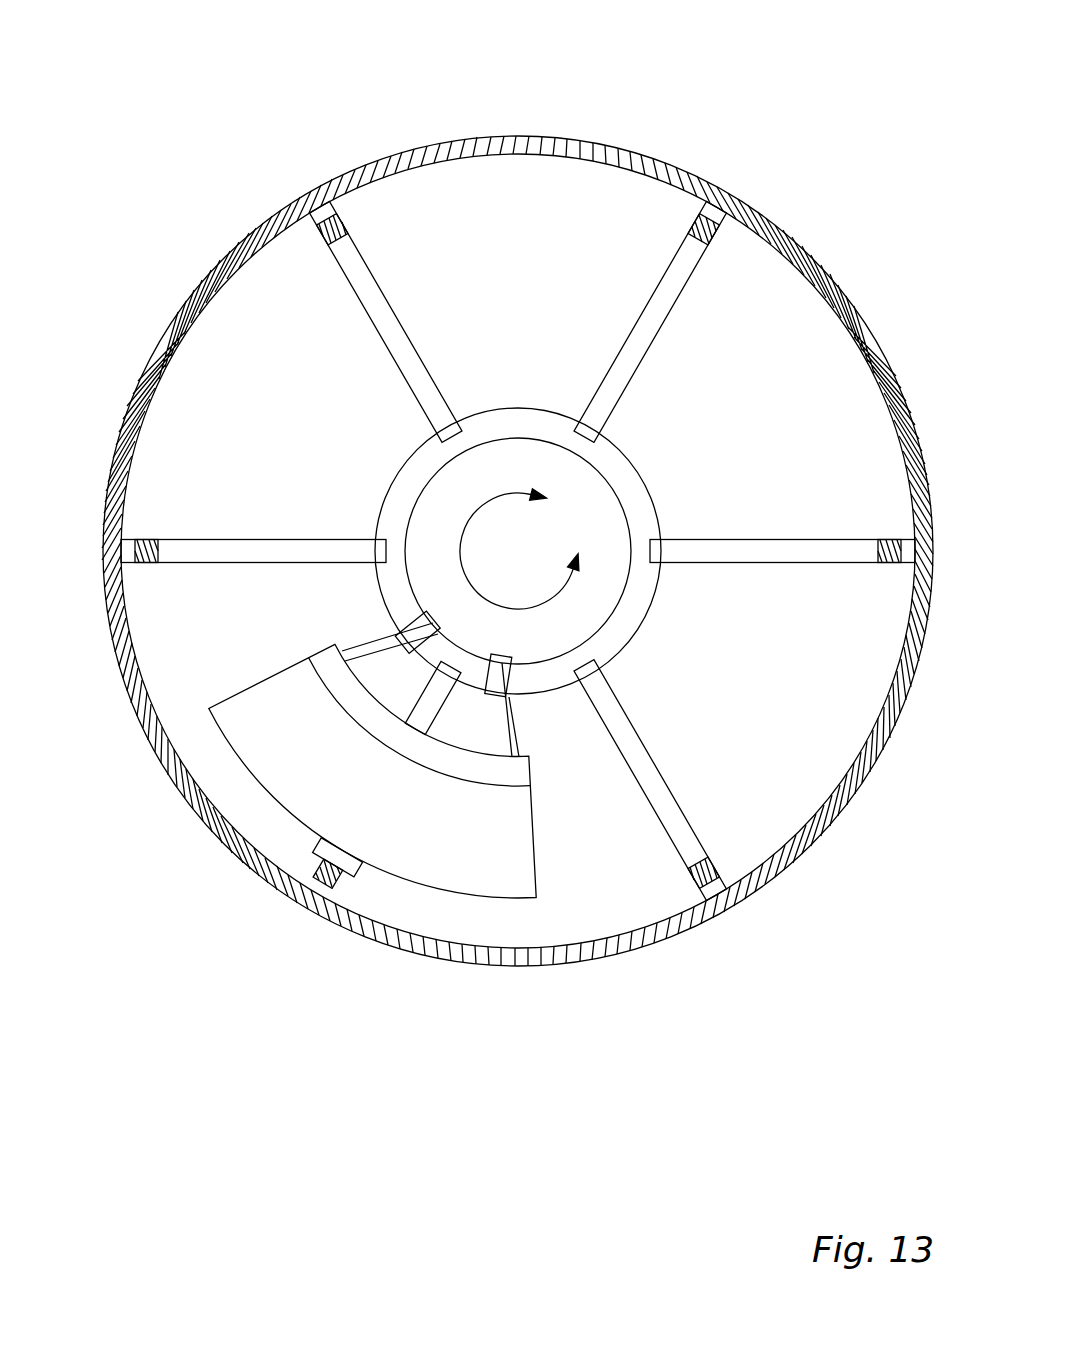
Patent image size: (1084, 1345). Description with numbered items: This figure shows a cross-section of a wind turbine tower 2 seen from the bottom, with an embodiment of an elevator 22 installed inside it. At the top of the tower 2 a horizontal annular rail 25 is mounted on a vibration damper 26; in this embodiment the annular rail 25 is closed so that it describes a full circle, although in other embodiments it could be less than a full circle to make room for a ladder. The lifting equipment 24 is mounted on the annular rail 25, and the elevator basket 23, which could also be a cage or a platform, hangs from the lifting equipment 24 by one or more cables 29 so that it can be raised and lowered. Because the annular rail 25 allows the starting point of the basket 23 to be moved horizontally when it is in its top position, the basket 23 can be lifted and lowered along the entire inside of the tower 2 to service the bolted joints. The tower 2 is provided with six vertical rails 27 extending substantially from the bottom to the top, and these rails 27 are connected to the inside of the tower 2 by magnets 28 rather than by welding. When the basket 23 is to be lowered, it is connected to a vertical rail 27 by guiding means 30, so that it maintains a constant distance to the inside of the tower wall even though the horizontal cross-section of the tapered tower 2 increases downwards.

The wind turbine tower 2 is at (672, 142).
The elevator 22 is at (279, 743).
The elevator basket 23 is at (433, 828).
The lifting equipment 24 is at (405, 632).
The annular rail 25 is at (627, 488).
The vibration damper 26 is at (517, 458).
The vertical rail 27 is at (402, 348).
The magnet 28 is at (323, 217).
The cable 29 is at (512, 717).
The guiding means 30 is at (333, 857).